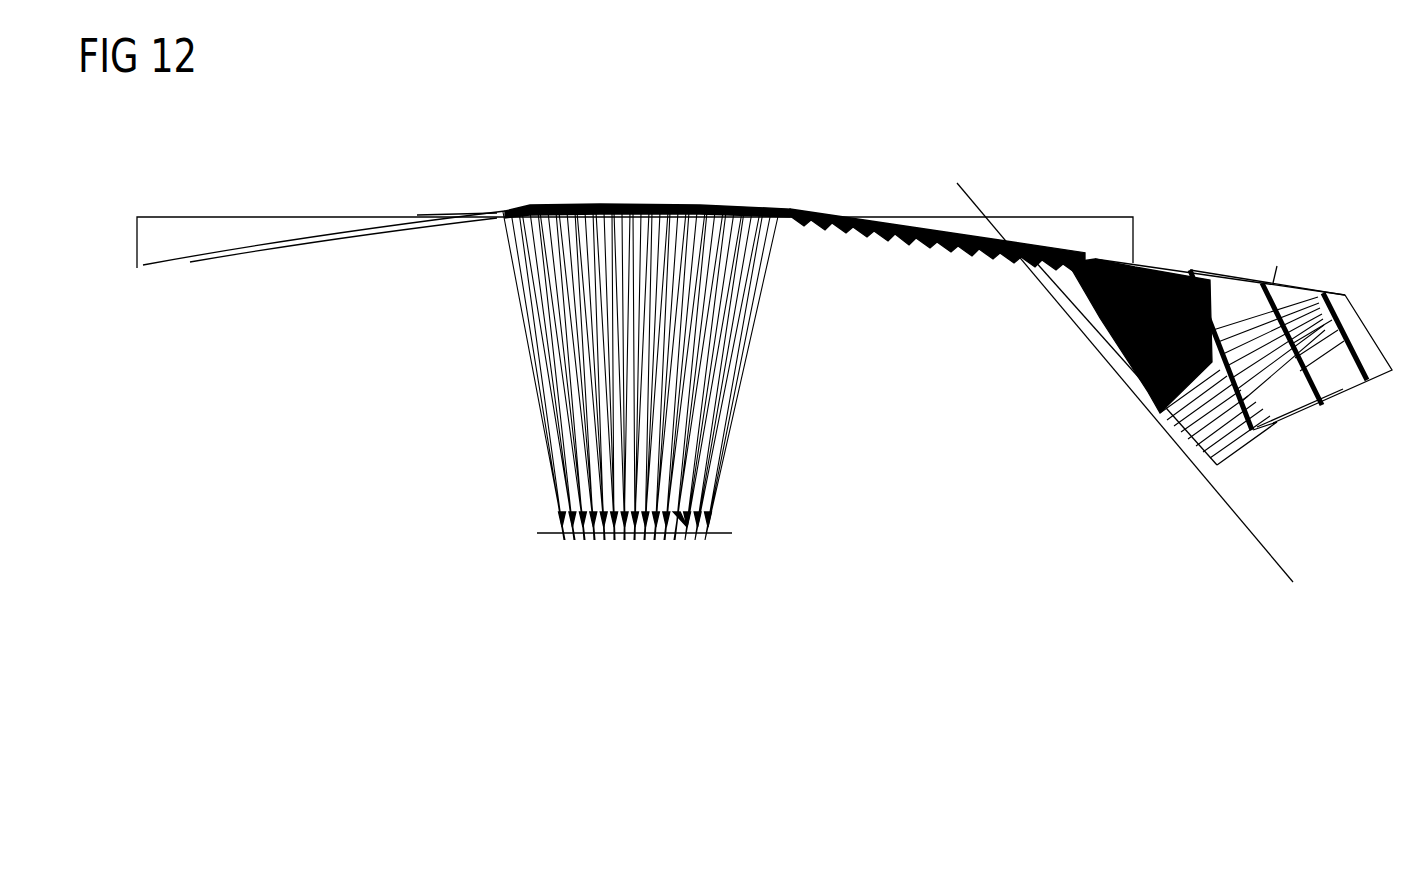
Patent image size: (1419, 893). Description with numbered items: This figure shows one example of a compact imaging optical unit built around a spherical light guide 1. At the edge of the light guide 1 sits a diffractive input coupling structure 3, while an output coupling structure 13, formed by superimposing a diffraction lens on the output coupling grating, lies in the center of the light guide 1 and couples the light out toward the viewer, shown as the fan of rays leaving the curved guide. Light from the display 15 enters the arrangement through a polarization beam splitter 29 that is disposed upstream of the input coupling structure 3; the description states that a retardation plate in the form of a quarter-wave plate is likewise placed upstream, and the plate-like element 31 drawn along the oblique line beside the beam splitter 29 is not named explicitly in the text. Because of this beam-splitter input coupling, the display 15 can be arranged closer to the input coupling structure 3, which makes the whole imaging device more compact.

The light guide 1 is at (876, 215).
The input coupling structure 3 is at (1110, 250).
The output coupling structure 13 is at (632, 185).
The display 15 is at (1347, 395).
The polarization beam splitter 29 is at (1233, 445).
The plate 31 is at (1173, 428).